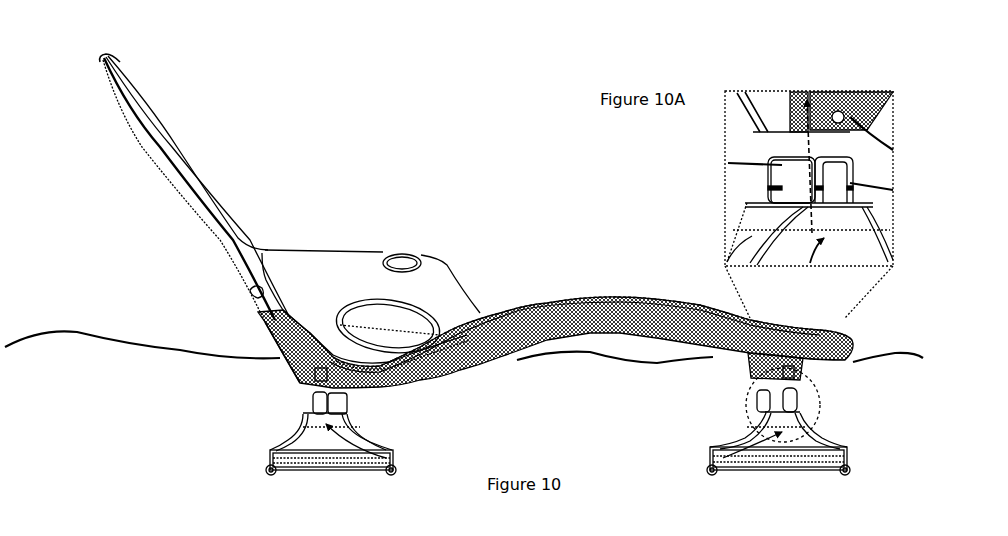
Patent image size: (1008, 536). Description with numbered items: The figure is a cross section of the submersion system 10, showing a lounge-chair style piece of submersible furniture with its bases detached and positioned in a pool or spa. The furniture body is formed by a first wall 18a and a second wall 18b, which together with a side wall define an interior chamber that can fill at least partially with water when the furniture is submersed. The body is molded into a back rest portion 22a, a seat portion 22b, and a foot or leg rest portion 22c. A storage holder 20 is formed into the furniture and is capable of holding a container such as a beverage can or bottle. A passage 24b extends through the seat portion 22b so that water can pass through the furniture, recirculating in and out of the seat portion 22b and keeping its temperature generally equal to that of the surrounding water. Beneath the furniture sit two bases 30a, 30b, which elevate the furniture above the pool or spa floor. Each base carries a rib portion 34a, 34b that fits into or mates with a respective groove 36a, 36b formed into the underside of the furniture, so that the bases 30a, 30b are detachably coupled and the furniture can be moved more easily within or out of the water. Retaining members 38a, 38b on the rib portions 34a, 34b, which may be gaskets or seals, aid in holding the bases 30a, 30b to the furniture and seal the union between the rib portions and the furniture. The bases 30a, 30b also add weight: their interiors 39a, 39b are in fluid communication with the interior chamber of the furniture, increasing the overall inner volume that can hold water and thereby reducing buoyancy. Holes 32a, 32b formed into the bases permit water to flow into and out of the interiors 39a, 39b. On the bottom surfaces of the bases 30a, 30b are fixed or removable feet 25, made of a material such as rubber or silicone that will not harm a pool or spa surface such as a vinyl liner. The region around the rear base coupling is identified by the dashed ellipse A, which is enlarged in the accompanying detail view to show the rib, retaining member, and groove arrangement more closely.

The submersion system 10 is at (452, 138).
The first wall 18a is at (140, 110).
The second wall 18b is at (127, 120).
The back rest portion 22a is at (175, 146).
The seat portion 22b is at (455, 372).
The foot or leg rest portion 22c is at (603, 293).
The storage holder 20 is at (398, 254).
The passage 24b is at (352, 310).
The groove 36a is at (313, 380).
The groove 36b is at (790, 369).
The rib portion 34a is at (310, 401).
The rib portion 34b is at (755, 393).
The retaining member 38a is at (346, 403).
The retaining member 38b is at (800, 401).
The base 30a is at (268, 450).
The base 30b is at (720, 442).
The hole 32a is at (393, 443).
The hole 32b is at (712, 458).
The interior 39a is at (307, 450).
The interior 39b is at (808, 450).
The feet 25 is at (394, 471).
The dashed ellipse A is at (751, 386).